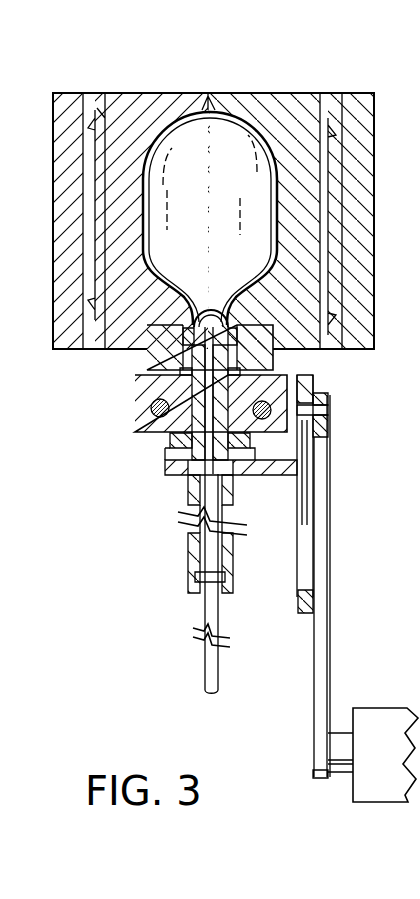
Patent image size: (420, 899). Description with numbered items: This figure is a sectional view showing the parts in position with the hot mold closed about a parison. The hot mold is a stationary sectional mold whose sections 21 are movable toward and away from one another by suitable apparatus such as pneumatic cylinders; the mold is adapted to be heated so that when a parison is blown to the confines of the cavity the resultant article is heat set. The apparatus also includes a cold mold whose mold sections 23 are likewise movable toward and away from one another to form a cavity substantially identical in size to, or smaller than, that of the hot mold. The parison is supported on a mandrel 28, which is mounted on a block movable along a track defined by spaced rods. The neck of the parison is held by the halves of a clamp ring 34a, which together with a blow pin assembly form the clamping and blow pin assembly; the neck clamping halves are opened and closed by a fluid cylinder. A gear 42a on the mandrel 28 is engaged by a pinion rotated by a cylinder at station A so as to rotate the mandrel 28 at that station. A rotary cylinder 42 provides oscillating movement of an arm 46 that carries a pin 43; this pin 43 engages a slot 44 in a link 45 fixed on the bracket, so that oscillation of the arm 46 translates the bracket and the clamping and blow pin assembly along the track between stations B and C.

The mold section 21 is at (137, 102).
The mold section 23 is at (275, 102).
The mandrel 28 is at (193, 335).
The clamp ring 34a is at (193, 345).
The gear 42a is at (162, 455).
The pin 43 is at (330, 408).
The slot 44 is at (308, 560).
The link 45 is at (300, 614).
The arm 46 is at (330, 618).
The rotary cylinder 42 is at (385, 718).